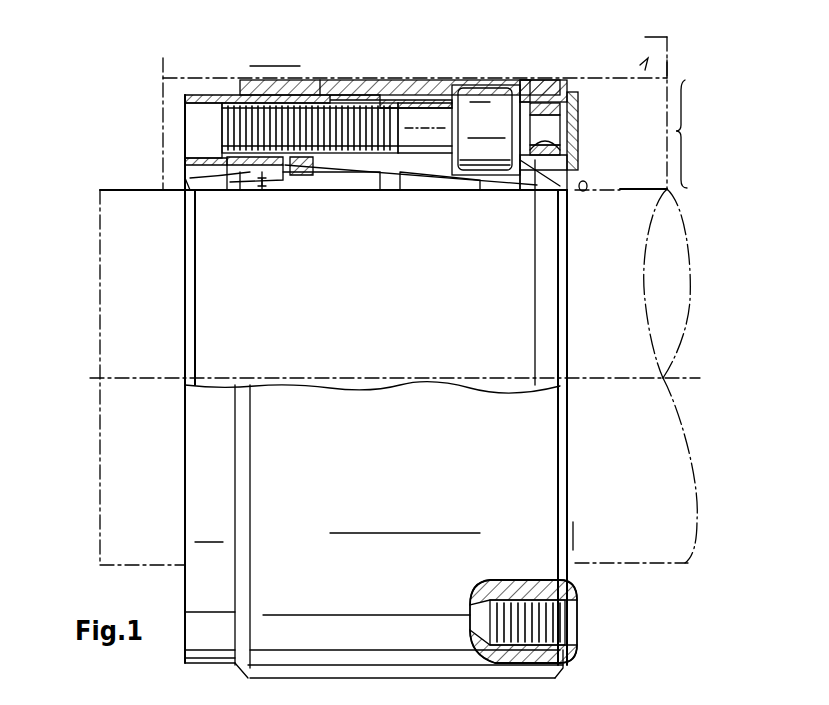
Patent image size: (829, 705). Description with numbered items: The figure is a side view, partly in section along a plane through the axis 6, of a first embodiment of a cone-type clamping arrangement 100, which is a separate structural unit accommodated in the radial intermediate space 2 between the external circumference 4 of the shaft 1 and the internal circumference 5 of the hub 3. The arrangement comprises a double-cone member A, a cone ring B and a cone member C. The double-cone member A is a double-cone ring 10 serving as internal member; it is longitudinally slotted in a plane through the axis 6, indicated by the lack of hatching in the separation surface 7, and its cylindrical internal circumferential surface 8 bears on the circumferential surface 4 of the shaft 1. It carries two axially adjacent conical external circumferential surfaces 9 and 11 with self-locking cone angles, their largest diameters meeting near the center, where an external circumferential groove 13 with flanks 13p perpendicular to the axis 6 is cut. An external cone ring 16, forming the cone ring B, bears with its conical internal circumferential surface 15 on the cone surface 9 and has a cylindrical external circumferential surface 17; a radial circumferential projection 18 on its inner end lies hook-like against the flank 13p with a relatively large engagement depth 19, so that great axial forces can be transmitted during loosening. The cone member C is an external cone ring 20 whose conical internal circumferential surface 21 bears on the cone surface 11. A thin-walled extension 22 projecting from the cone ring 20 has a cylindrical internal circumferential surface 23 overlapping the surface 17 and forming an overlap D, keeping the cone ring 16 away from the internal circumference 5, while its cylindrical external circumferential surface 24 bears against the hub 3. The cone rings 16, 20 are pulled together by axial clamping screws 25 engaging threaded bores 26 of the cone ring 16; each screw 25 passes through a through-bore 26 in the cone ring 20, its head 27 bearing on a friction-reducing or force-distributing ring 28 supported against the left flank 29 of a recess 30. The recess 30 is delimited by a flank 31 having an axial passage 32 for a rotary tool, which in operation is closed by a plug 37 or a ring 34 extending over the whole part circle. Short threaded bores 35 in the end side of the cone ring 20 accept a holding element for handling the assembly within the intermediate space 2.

The shaft 1 is at (675, 288).
The radial intermediate space 2 is at (687, 131).
The hub 3 is at (660, 36).
The external circumference of the shaft 4 is at (585, 196).
The internal circumference of the hub 5 is at (610, 62).
The axis 6 is at (685, 382).
The separation surface 7 is at (205, 182).
The cylindrical internal circumferential surface 8 is at (380, 190).
The conical external circumferential surface 9 is at (215, 178).
The double-cone ring 10 is at (240, 180).
The conical external circumferential surface 11 is at (418, 188).
The external circumferential groove 13 is at (330, 178).
The flank 13p is at (290, 185).
The conical internal circumferential surface 15 is at (233, 200).
The external cone ring 16 is at (190, 118).
The cylindrical external circumferential surface 17 is at (192, 94).
The radial circumferential projection 18 is at (310, 195).
The engagement depth 19 is at (270, 200).
The external cone ring 20 is at (545, 92).
The conical internal circumferential surface 21 is at (430, 183).
The thin-walled extension 22 is at (260, 88).
The cylindrical internal circumferential surface 23 is at (368, 98).
The cylindrical external circumferential surface 24 is at (340, 92).
The axial clamping screw 25 is at (410, 120).
The threaded bore / through-bore 26 is at (238, 106).
The head 27 is at (488, 100).
The friction-reducing and/or force-distributing ring 28 is at (450, 88).
The left flank 29 is at (465, 183).
The recess 30 is at (500, 190).
The flank 31 is at (532, 195).
The axial passage 32 is at (568, 146).
The ring 34 is at (578, 594).
The short threaded bore 35 is at (545, 630).
The plug 37 is at (580, 94).
The cone-type clamping arrangement 100 is at (671, 72).
The double-cone member A is at (193, 192).
The cone ring B is at (184, 101).
The cone member C is at (551, 75).
The overlap D is at (265, 62).